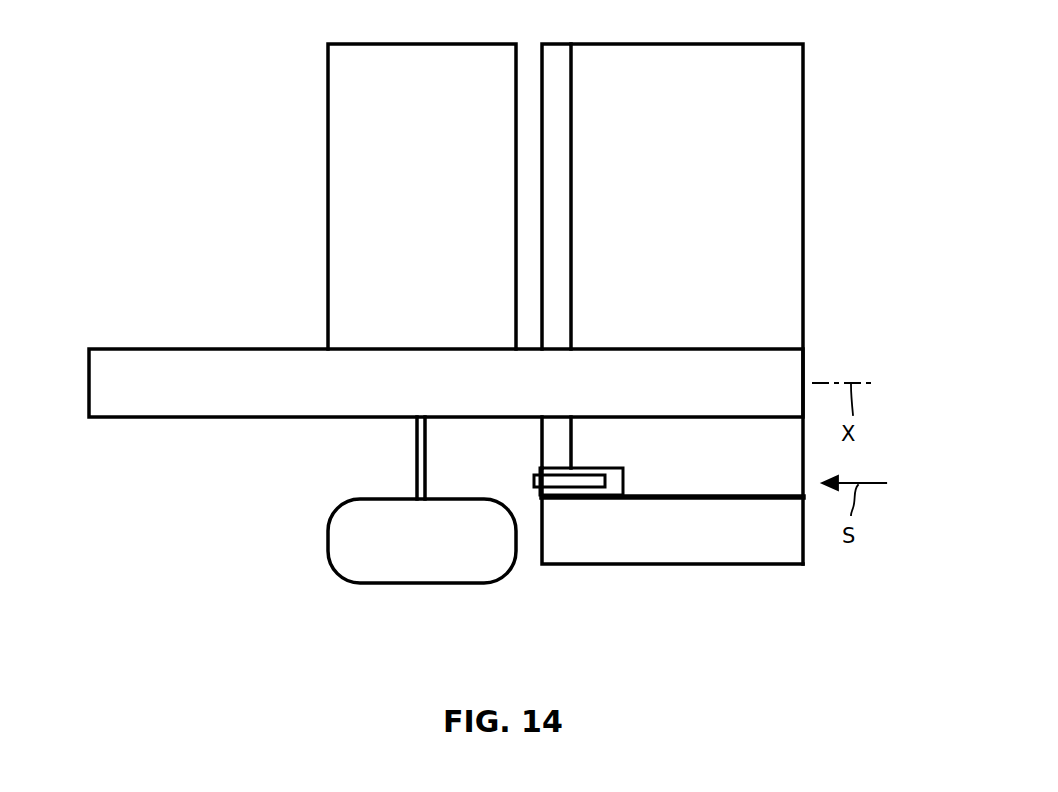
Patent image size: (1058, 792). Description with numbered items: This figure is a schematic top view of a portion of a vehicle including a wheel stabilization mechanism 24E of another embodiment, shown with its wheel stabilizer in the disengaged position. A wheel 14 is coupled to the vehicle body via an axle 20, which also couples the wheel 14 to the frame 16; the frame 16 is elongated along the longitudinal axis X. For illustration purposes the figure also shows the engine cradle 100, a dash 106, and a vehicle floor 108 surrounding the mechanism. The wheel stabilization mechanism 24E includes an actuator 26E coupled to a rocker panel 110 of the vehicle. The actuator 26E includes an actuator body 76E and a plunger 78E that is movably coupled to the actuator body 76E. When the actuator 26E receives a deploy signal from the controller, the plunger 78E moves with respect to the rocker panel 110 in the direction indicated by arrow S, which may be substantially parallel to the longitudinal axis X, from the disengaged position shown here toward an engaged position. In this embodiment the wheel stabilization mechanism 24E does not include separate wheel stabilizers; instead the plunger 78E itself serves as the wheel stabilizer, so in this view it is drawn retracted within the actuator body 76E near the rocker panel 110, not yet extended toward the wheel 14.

The wheel 14 is at (328, 541).
The frame 16 is at (99, 347).
The axle 20 is at (416, 470).
The wheel stabilization mechanism 24E is at (581, 468).
The actuator 26E is at (609, 468).
The actuator body 76E is at (623, 480).
The plunger 78E is at (558, 488).
The engine cradle 100 is at (328, 152).
The dash 106 is at (567, 25).
The vehicle floor 108 is at (716, 43).
The rocker panel 110 is at (568, 565).